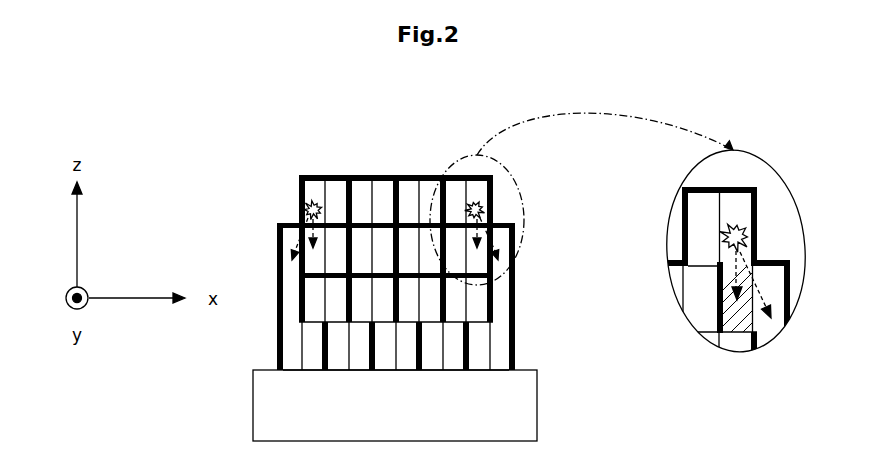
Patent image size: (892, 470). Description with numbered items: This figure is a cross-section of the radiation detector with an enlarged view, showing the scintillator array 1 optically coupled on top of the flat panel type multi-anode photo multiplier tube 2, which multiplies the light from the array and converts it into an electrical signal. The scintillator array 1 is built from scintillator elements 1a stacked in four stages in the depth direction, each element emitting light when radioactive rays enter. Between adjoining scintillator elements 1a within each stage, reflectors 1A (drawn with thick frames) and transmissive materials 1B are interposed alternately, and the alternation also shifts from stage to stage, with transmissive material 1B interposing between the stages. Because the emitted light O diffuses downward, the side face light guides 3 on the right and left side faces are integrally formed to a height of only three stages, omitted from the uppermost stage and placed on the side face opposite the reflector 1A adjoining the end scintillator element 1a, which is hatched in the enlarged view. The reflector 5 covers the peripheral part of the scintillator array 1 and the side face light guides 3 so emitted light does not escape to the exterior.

The scintillator array 1 is at (525, 246).
The reflector 1A is at (398, 194).
The transmissive material 1B is at (326, 192).
The scintillator element 1a is at (380, 200).
The reflector 5 is at (300, 197).
The side face light guide 3 is at (290, 351).
The flat panel type multi-anode photo multiplier tube 2 is at (543, 403).
The emitted light O is at (297, 239).